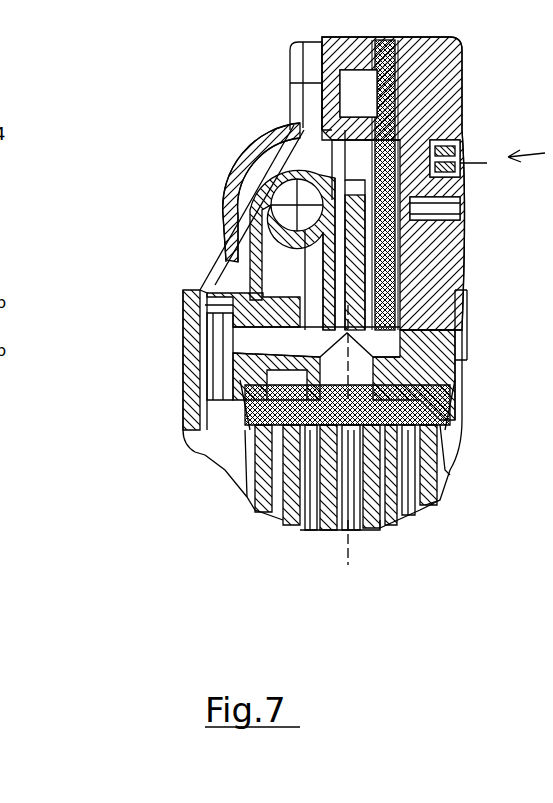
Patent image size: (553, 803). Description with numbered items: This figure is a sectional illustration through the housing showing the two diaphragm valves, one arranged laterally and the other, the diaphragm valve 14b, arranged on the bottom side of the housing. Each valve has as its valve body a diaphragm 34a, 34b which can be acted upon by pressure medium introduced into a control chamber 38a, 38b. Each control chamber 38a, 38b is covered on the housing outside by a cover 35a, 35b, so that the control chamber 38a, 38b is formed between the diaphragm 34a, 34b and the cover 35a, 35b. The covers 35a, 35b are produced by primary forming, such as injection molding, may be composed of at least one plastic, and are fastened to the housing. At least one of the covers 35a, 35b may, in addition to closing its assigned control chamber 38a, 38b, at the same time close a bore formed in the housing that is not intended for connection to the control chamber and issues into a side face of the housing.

The cover 35a is at (377, 183).
The control chamber 38a is at (400, 108).
The diaphragm 34a is at (462, 210).
The diaphragm 34b is at (280, 433).
The diaphragm valve 14b is at (333, 550).
The control chamber 38b is at (413, 517).
The cover 35b is at (462, 470).